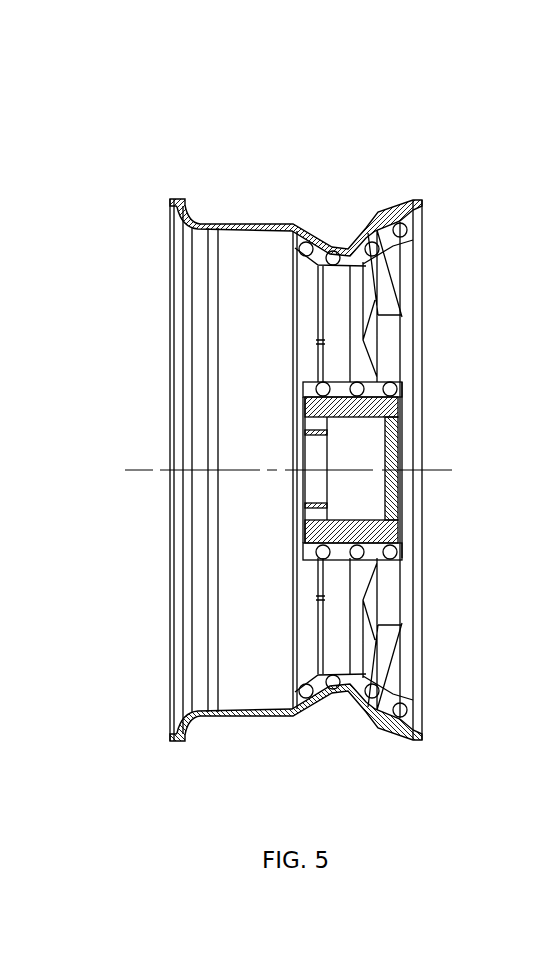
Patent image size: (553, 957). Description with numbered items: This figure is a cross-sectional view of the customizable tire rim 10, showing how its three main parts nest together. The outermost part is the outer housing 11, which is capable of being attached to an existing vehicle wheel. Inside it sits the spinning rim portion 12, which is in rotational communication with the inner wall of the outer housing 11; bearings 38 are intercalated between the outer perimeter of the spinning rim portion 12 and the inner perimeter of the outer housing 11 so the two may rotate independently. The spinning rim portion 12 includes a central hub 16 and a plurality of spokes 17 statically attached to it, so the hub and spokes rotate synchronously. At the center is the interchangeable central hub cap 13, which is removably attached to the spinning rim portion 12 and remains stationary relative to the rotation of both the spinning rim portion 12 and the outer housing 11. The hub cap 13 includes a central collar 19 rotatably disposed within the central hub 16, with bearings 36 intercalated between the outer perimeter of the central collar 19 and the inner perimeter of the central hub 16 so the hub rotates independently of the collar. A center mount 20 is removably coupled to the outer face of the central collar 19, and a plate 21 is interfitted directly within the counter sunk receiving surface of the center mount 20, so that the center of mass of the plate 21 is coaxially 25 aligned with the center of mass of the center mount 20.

The customizable tire rim 10 is at (226, 109).
The outer housing 11 is at (262, 224).
The spinning rim portion 12 is at (308, 350).
The interchangeable central hub cap 13 is at (420, 413).
The central hub 16 is at (293, 440).
The spokes 17 is at (362, 267).
The central collar 19 is at (298, 530).
The center mount 20 is at (393, 495).
The plate 21 is at (393, 533).
The coaxial alignment 25 is at (475, 470).
The bearings 36 is at (363, 382).
The bearings 38 is at (363, 226).